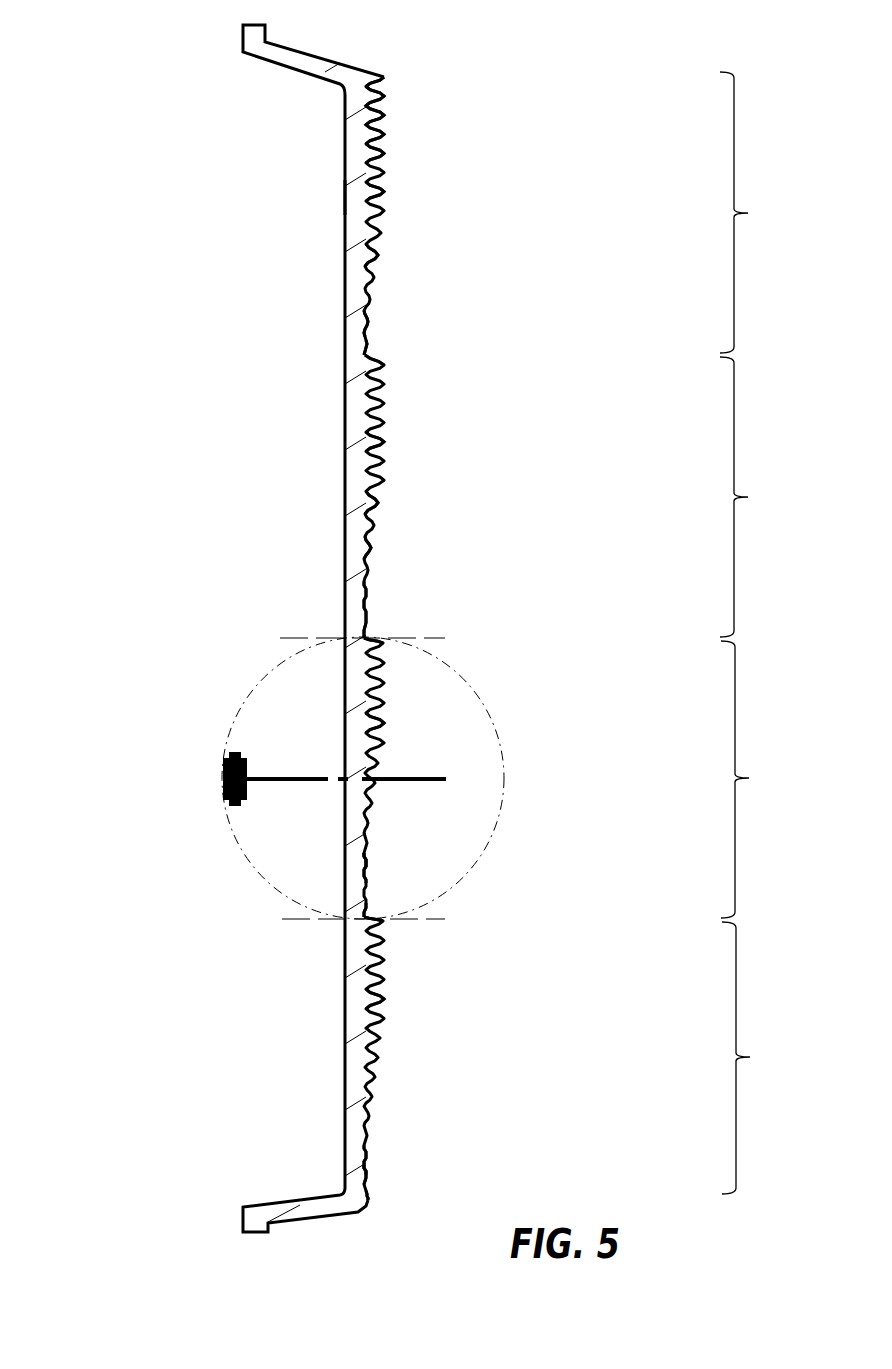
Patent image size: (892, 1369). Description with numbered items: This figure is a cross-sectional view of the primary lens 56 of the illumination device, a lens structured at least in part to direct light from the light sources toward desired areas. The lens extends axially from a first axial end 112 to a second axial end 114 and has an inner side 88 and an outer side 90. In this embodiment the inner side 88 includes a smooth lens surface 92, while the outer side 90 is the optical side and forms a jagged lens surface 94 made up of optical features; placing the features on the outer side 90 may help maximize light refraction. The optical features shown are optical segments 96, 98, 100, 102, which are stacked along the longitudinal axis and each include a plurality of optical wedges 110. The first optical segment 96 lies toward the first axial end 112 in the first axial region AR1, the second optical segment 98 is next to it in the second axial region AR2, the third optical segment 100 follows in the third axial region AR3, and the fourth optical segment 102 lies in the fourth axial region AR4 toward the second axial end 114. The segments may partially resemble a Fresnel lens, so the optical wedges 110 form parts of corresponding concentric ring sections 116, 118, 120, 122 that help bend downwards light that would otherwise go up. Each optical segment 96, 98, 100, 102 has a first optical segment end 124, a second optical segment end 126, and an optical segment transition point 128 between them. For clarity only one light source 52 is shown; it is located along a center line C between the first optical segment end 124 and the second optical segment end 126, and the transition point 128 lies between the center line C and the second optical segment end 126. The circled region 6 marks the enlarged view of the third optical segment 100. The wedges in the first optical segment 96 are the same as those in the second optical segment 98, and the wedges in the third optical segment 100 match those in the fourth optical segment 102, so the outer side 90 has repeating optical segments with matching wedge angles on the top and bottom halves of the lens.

The primary lens 56 is at (80, 169).
The first axial end 112 is at (301, 52).
The second axial end 114 is at (356, 1217).
The smooth lens surface 92 is at (345, 415).
The inner side 88 is at (356, 198).
The first optical segment end 124 is at (368, 74).
The second optical segment end 126 is at (369, 356).
The optical segment transition point 128 is at (345, 323).
The optical wedges 110 is at (385, 138).
The first optical segment 96 is at (385, 160).
The concentric ring section 116 is at (380, 198).
The outer side 90 is at (379, 253).
The jagged lens surface 94 is at (383, 437).
The second optical segment 98 is at (379, 503).
The concentric ring section 118 is at (369, 542).
The third optical segment 100 is at (380, 716).
The concentric ring section 120 is at (370, 865).
The fourth optical segment 102 is at (375, 998).
The concentric ring section 122 is at (369, 1174).
The light source 52 is at (227, 804).
The center line C is at (428, 778).
The enlarged view of the third optical segment 6 is at (232, 698).
The first axial region AR1 is at (765, 212).
The second axial region AR2 is at (765, 497).
The third axial region AR3 is at (765, 779).
The fourth axial region AR4 is at (766, 1058).